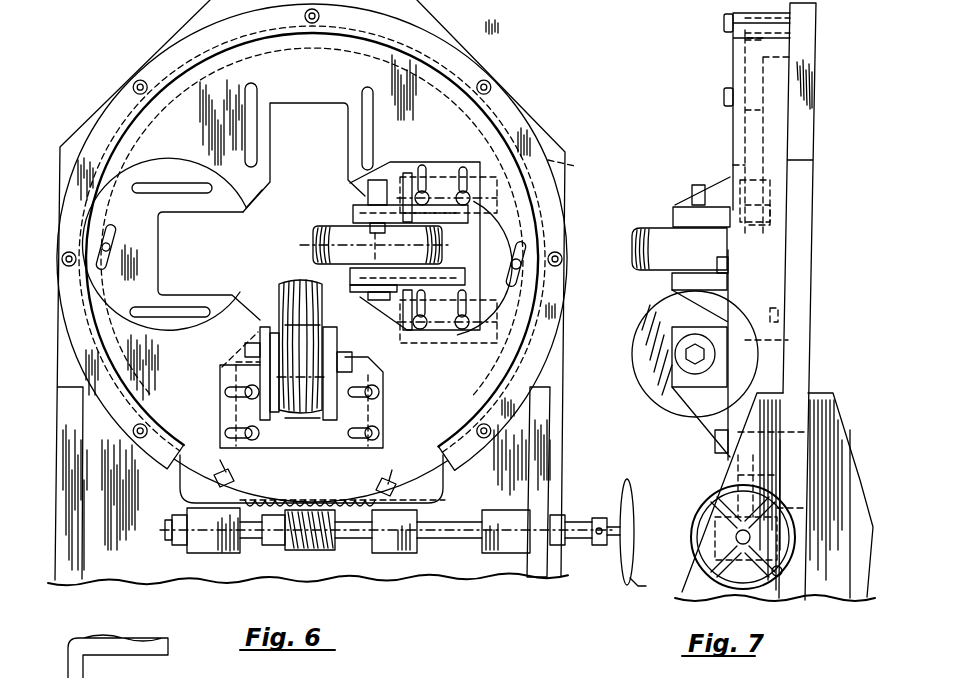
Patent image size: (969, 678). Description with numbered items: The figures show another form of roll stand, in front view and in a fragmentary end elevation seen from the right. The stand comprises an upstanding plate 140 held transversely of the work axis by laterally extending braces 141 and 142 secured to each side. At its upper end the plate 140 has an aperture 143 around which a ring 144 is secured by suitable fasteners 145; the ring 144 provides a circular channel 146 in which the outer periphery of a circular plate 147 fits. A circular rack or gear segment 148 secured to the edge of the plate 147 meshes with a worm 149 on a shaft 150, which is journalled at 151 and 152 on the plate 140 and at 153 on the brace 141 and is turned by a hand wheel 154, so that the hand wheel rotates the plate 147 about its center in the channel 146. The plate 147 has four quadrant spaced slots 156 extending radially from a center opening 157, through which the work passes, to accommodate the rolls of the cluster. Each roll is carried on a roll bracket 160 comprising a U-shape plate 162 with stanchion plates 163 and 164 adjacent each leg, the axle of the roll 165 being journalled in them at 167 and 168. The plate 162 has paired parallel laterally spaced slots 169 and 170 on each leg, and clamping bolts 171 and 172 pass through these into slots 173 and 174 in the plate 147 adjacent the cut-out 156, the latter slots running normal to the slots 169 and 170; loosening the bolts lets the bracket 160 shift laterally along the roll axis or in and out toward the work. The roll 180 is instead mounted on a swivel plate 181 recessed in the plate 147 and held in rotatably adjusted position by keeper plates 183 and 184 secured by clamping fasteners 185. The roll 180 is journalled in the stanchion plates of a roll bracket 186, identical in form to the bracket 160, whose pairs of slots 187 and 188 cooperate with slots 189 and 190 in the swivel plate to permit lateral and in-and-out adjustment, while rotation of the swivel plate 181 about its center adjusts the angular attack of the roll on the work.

In FIG. 6, the upstanding plate 140 is at (420, 575).
In FIG. 7, the upstanding plate 140 is at (802, 210).
In FIG. 6, the laterally extending brace 141 is at (552, 442).
In FIG. 7, the laterally extending brace 141 is at (718, 598).
In FIG. 7, the laterally extending brace 142 is at (822, 598).
In FIG. 6, the aperture 143 is at (245, 62).
In FIG. 7, the aperture 143 is at (800, 60).
In FIG. 6, the ring 144 is at (507, 118).
In FIG. 7, the ring 144 is at (732, 38).
In FIG. 6, the fasteners 145 is at (494, 92).
In FIG. 7, the fasteners 145 is at (724, 20).
In FIG. 6, the circular channel 146 is at (556, 201).
In FIG. 7, the circular channel 146 is at (763, 37).
In FIG. 6, the circular plate 147 is at (175, 113).
In FIG. 7, the circular plate 147 is at (745, 133).
In FIG. 6, the circular rack or gear segment 148 is at (312, 498).
In FIG. 6, the worm 149 is at (292, 548).
In FIG. 6, the shaft 150 is at (252, 540).
In FIG. 6, the journal 151 is at (205, 553).
In FIG. 6, the journal 152 is at (393, 553).
In FIG. 6, the journal 153 is at (508, 557).
In FIG. 6, the hand wheel 154 is at (636, 585).
In FIG. 7, the hand wheel 154 is at (710, 496).
In FIG. 6, the quadrant spaced slots 156 is at (270, 163).
In FIG. 6, the center opening 157 is at (257, 200).
In FIG. 6, the roll bracket 160 is at (392, 417).
In FIG. 6, the U-shape plate 162 is at (398, 372).
In FIG. 6, the stanchion plate 163 is at (238, 360).
In FIG. 6, the stanchion plate 164 is at (340, 364).
In FIG. 7, the stanchion plate 164 is at (693, 405).
In FIG. 6, the roll 165 is at (297, 257).
In FIG. 7, the roll 165 is at (650, 365).
In FIG. 6, the axle journal 167 is at (262, 327).
In FIG. 6, the axle journal 168 is at (355, 307).
In FIG. 6, the slot 169 is at (237, 397).
In FIG. 6, the slot 170 is at (380, 401).
In FIG. 6, the clamping bolt 171 is at (251, 443).
In FIG. 6, the clamping bolt 172 is at (368, 452).
In FIG. 6, the slot 173 is at (244, 350).
In FIG. 6, the slot 174 is at (383, 426).
In FIG. 6, the roll 180 is at (315, 230).
In FIG. 7, the roll 180 is at (640, 249).
In FIG. 6, the swivel plate 181 is at (150, 240).
In FIG. 7, the keeper plate 183 is at (770, 190).
In FIG. 7, the keeper plate 184 is at (788, 340).
In FIG. 7, the clamping fasteners 185 is at (778, 315).
In FIG. 6, the roll bracket 186 is at (445, 153).
In FIG. 6, the slots 187 is at (427, 312).
In FIG. 6, the slots 188 is at (452, 167).
In FIG. 6, the slot 189 is at (525, 299).
In FIG. 6, the slot 190 is at (562, 172).